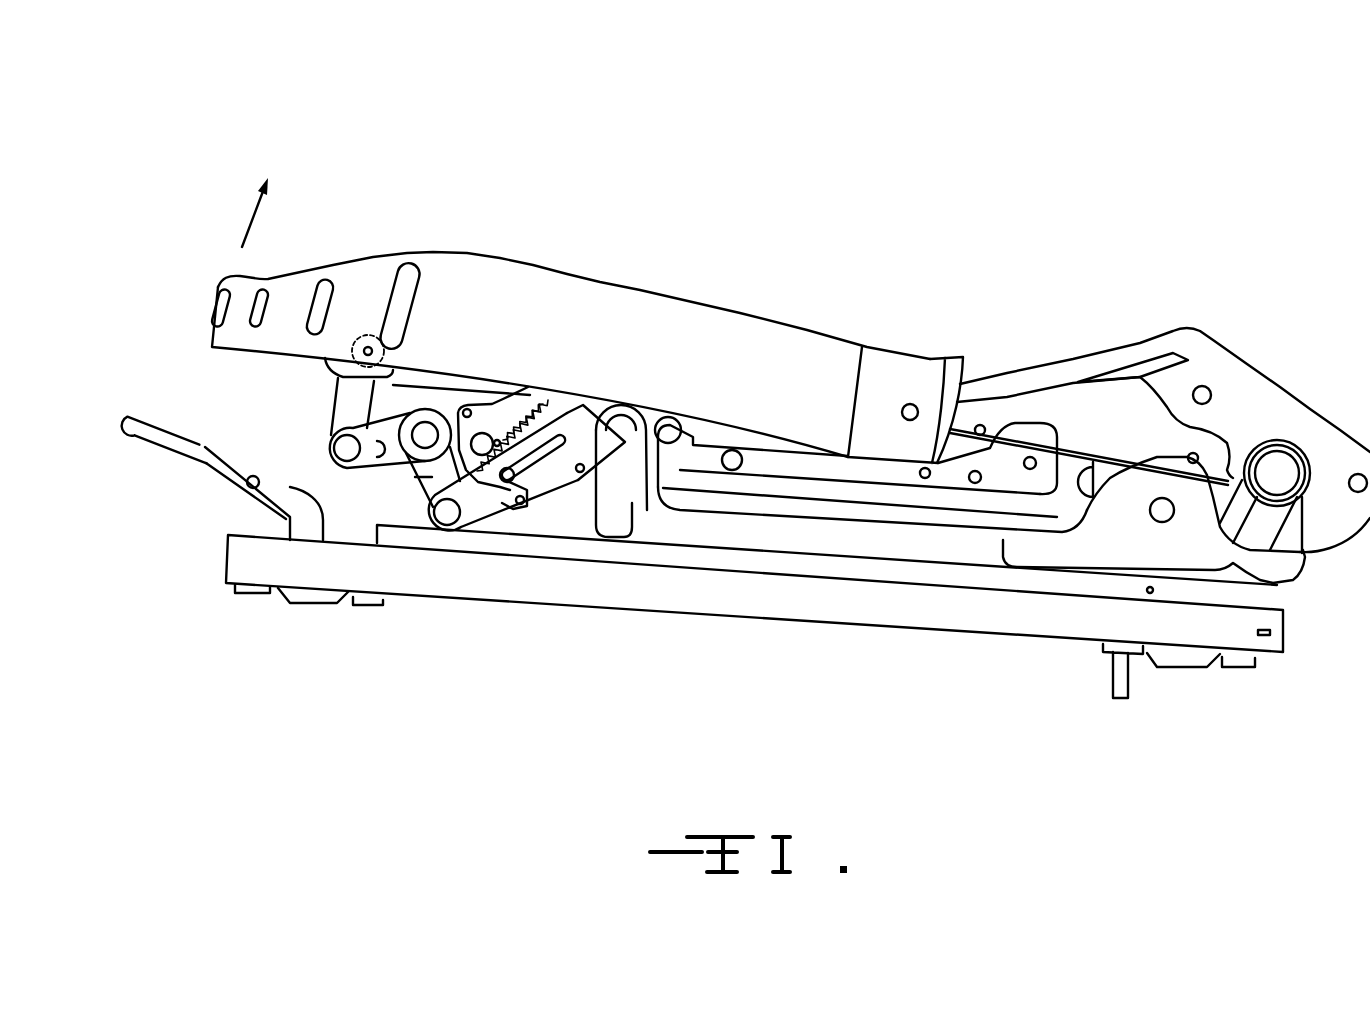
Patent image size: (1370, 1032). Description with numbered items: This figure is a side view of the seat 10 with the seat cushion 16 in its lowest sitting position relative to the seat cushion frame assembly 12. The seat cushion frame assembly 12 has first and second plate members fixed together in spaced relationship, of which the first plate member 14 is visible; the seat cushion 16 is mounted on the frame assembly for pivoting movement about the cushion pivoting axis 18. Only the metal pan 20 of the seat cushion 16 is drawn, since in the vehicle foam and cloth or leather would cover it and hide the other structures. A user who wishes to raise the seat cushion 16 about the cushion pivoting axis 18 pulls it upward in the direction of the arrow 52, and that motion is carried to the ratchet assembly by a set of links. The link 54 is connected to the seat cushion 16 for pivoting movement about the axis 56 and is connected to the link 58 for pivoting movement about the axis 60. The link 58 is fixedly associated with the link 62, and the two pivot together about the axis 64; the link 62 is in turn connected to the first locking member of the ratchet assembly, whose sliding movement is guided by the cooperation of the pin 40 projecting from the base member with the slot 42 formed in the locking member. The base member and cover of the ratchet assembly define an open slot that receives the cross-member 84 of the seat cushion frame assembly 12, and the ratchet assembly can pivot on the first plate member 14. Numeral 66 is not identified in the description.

The seat 10 is at (920, 189).
The seat cushion frame assembly 12 is at (1222, 306).
The first plate member 14 is at (636, 507).
The seat cushion 16 is at (392, 196).
The cushion pivoting axis 18 is at (913, 407).
The metal pan 20 is at (473, 293).
The pin 40 is at (508, 482).
The slot 42 is at (549, 467).
The arrow 52 is at (252, 211).
The link 54 is at (355, 392).
The axis 56 is at (366, 353).
The link 58 is at (412, 467).
The axis 60 is at (330, 448).
The link 62 is at (412, 460).
The axis 64 is at (423, 440).
The link arm 66 is at (450, 514).
The cross-member 84 is at (640, 408).